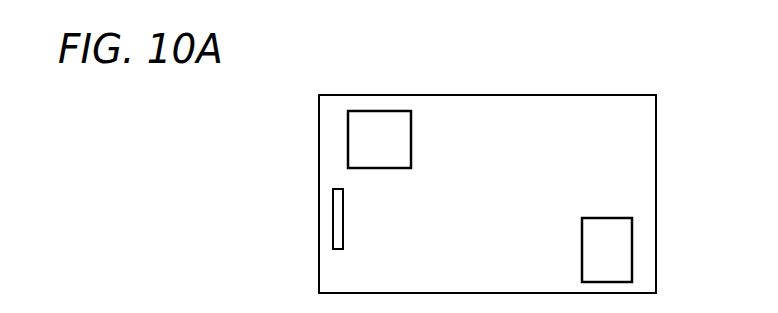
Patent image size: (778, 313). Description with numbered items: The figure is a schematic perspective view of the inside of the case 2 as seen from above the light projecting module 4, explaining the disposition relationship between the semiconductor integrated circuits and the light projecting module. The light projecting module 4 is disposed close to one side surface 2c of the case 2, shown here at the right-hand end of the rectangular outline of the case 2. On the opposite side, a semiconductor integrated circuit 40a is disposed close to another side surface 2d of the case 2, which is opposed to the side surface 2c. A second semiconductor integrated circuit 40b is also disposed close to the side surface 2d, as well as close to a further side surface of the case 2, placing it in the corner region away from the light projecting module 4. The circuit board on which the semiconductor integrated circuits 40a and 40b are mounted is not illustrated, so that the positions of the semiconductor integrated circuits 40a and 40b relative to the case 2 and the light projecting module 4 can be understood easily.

The case 2 is at (489, 95).
The side surface 2c is at (656, 181).
The side surface 2d is at (319, 192).
The light projecting module 4 is at (616, 249).
The semiconductor integrated circuit 40a is at (338, 228).
The semiconductor integrated circuit 40b is at (377, 123).